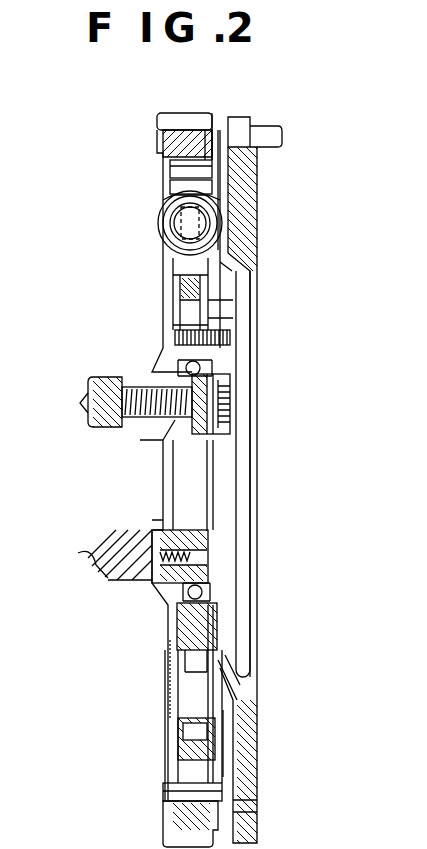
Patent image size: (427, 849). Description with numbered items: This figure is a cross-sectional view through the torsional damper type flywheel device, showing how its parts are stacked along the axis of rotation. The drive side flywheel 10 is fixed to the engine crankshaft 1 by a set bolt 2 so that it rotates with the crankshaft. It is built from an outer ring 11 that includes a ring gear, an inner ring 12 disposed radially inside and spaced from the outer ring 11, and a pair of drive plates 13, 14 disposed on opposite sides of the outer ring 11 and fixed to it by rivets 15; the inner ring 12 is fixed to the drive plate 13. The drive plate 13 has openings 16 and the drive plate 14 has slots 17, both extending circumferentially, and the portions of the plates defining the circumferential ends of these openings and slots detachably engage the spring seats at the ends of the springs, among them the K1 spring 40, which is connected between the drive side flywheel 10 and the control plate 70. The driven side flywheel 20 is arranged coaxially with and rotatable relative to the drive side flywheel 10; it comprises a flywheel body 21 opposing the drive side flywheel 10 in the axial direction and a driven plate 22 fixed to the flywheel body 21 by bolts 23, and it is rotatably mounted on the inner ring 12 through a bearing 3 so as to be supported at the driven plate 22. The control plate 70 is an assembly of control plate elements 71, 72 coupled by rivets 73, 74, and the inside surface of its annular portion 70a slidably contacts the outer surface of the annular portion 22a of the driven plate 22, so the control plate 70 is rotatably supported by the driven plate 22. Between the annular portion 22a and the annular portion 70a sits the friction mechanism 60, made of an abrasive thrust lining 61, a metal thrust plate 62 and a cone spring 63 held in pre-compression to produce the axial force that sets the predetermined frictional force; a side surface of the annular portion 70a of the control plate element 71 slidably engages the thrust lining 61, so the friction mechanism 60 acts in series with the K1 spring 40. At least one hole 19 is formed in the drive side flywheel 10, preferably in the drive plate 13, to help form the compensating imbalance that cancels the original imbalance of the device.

The engine crankshaft 1 is at (97, 583).
The set bolt 2 is at (233, 395).
The bearing 3 is at (233, 368).
The drive side flywheel 10 is at (168, 112).
The outer ring 11 is at (157, 122).
The inner ring 12 is at (215, 430).
The drive plate 13 is at (168, 151).
The drive plate 14 is at (213, 126).
The rivets 15 is at (180, 170).
The openings 16 is at (166, 213).
The slots 17 is at (224, 200).
The hole 19 is at (170, 682).
The driven side flywheel 20 is at (238, 117).
The flywheel body 21 is at (243, 165).
The driven plate 22 is at (240, 625).
The annular portion 22a is at (240, 660).
The bolts 23 is at (235, 342).
The K1 spring 40 is at (160, 238).
The friction mechanism 60 is at (237, 633).
The thrust lining 61 is at (175, 330).
The thrust plate 62 is at (238, 273).
The cone spring 63 is at (233, 318).
The control plate 70 is at (160, 193).
The annular portion 70a is at (237, 647).
The control plate element 71 is at (170, 665).
The control plate element 72 is at (238, 692).
The rivet 73 is at (173, 291).
The rivet 74 is at (235, 733).